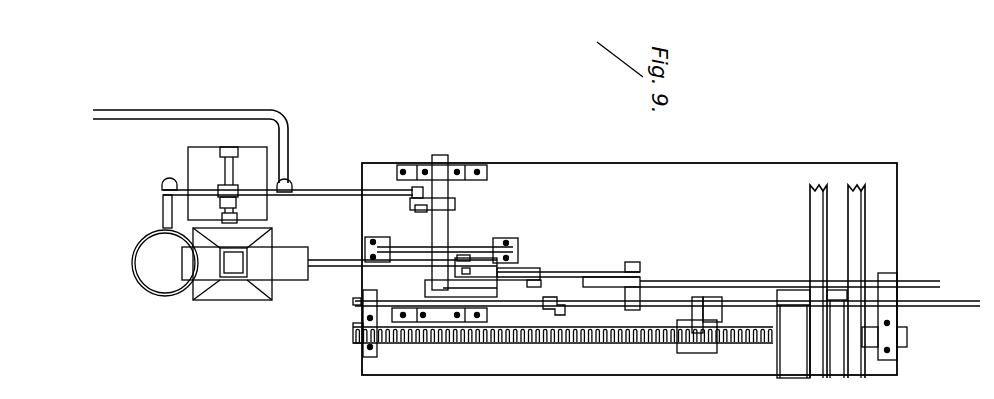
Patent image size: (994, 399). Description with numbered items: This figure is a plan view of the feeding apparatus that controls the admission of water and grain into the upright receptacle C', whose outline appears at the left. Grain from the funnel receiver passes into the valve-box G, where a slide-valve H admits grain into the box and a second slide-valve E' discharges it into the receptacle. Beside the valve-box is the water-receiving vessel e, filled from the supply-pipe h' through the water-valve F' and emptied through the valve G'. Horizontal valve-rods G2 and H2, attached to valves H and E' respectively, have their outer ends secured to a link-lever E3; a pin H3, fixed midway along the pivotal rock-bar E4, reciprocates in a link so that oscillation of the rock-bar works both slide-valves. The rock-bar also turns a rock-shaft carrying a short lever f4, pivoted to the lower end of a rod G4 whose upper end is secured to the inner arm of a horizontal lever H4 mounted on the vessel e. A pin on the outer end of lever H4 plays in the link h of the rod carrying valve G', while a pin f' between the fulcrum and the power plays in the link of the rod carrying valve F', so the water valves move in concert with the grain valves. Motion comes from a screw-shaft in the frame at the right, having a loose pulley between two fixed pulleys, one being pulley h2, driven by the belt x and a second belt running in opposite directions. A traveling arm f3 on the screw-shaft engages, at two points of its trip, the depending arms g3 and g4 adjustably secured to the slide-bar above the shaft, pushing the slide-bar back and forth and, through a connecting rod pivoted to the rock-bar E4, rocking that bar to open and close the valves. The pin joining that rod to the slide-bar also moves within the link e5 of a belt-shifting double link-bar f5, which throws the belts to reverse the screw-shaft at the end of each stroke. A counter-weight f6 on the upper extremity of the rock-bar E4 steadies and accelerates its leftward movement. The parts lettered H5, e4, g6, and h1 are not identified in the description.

The supply-pipe h' is at (192, 139).
The water-receiving vessel e is at (227, 185).
The discharge valve G' is at (158, 203).
The water-valve F' is at (262, 201).
The wheel C' is at (165, 263).
The valve-box G is at (232, 271).
The slide-valve H is at (245, 263).
The valve-rod G2 is at (402, 273).
The valve-rod H2 is at (345, 197).
The column H5 is at (439, 238).
The rod G4 is at (414, 207).
The horizontal lever H4 is at (424, 211).
The link-lever E3 is at (497, 238).
The pin H3 is at (492, 277).
The pin f' is at (568, 278).
The rock-bar E4 is at (492, 277).
The depending arm g3 is at (554, 309).
The fixed pulley h2 is at (580, 275).
The block e4 is at (612, 277).
The link e5 is at (640, 286).
The double link-bar f5 is at (737, 281).
The short lever f4 is at (606, 344).
The traveling arm f3 is at (697, 336).
The depending arm g4 is at (719, 315).
The slide-valve E' is at (793, 334).
The counter-weight f6 is at (793, 341).
The strip g6 is at (799, 341).
The link h is at (820, 281).
The belt x is at (858, 281).
The plate h1 is at (838, 334).